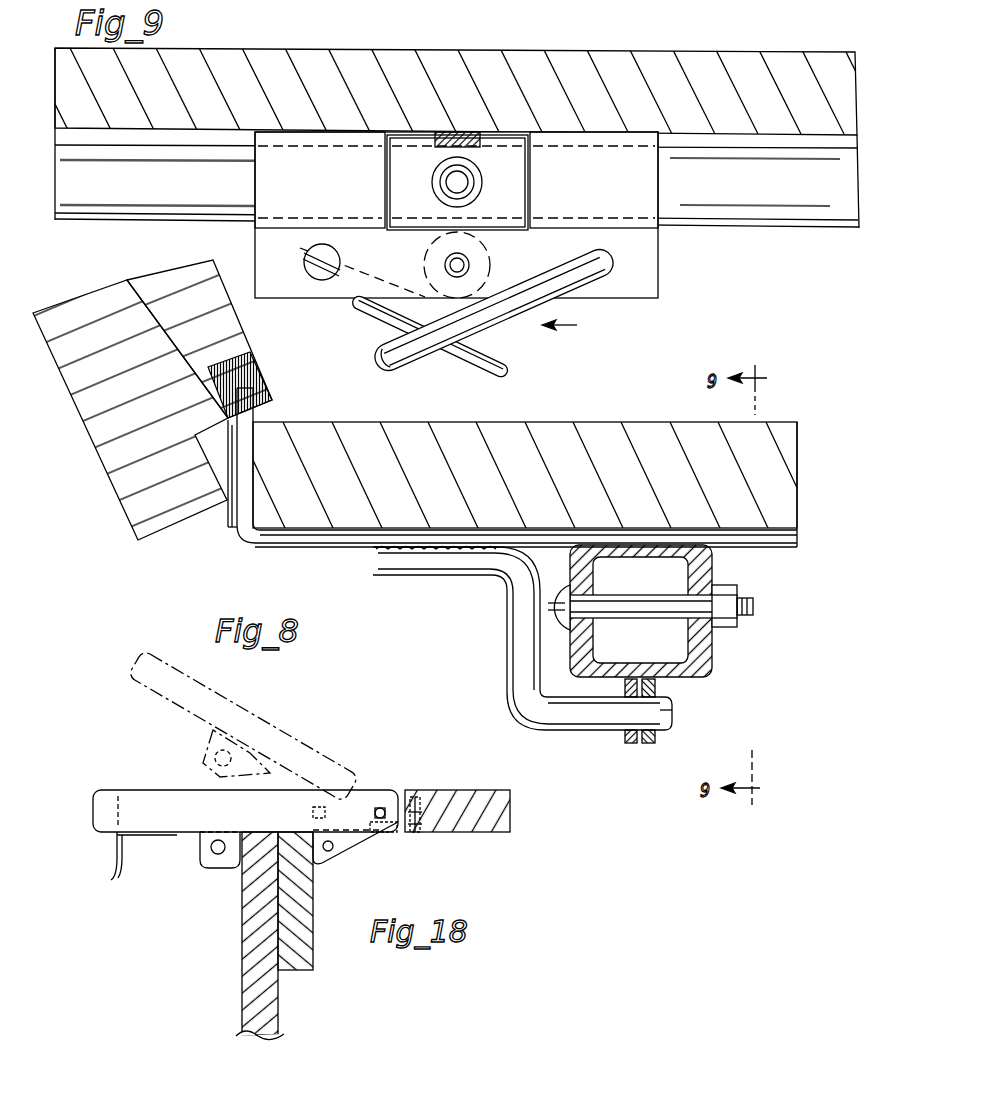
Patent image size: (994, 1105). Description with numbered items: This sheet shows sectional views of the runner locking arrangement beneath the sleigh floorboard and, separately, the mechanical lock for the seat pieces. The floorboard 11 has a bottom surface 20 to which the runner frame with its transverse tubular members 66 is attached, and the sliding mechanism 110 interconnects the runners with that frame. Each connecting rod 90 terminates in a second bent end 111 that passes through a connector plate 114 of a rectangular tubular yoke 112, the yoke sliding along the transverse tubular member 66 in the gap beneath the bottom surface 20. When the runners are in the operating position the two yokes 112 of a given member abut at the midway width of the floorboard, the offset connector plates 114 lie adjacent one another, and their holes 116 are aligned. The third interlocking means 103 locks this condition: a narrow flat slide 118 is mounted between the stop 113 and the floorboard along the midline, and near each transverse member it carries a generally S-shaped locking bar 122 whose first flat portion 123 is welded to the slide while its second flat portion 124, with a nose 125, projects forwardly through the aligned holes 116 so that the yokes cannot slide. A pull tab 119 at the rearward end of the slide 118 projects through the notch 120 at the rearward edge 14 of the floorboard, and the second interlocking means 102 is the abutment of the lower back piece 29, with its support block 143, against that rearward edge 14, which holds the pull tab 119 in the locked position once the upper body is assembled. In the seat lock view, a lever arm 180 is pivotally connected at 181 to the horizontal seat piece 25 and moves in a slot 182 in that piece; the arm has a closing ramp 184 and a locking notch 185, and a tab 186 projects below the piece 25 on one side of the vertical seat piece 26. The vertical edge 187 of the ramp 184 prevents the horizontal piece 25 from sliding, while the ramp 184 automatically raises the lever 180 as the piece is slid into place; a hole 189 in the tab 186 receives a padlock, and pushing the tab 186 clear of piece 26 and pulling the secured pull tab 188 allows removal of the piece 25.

In FIG. 9, the floorboard 11 is at (549, 50).
In FIG. 8, the floorboard 11 is at (641, 422).
In FIG. 9, the bottom surface 20 is at (857, 138).
In FIG. 8, the bottom surface 20 is at (345, 548).
In FIG. 9, the transverse tubular member 66 is at (806, 224).
In FIG. 8, the transverse tubular member 66 is at (700, 645).
In FIG. 9, the third interlocking means 103 is at (671, 260).
In FIG. 8, the third interlocking means 103 is at (570, 738).
In FIG. 9, the yoke 112 is at (318, 197).
In FIG. 9, the connector plate 114 is at (258, 248).
In FIG. 8, the connector plate 114 is at (625, 743).
In FIG. 9, the slide 118 is at (441, 148).
In FIG. 8, the slide 118 is at (362, 548).
In FIG. 9, the stop 113 is at (507, 213).
In FIG. 9, the nose 125 is at (470, 262).
In FIG. 8, the nose 125 is at (673, 716).
In FIG. 9, the hole 116 is at (445, 265).
In FIG. 9, the connecting rod 90 is at (446, 366).
In FIG. 9, the second bent end 111 is at (606, 268).
In FIG. 9, the sliding mechanism 110 is at (576, 328).
In FIG. 8, the lower back piece 29 is at (100, 462).
In FIG. 8, the support block 143 is at (246, 330).
In FIG. 8, the second interlocking means 102 is at (201, 529).
In FIG. 8, the notch 120 is at (226, 525).
In FIG. 8, the rearward edge 14 is at (235, 520).
In FIG. 8, the pull tab 119 is at (256, 412).
In FIG. 8, the first flat portion 123 is at (425, 576).
In FIG. 8, the locking bar 122 is at (517, 652).
In FIG. 8, the second flat portion 124 is at (560, 727).
In FIG. 18, the lever arm 180 is at (224, 698).
In FIG. 18, the pull tab 188 is at (110, 868).
In FIG. 18, the locking notch 185 is at (233, 882).
In FIG. 18, the hole 189 is at (212, 846).
In FIG. 18, the tab 186 is at (207, 860).
In FIG. 18, the vertical seat piece 26 is at (248, 950).
In FIG. 18, the closing ramp 184 is at (352, 854).
In FIG. 18, the vertical edge 187 is at (313, 865).
In FIG. 18, the pivot 181 is at (390, 792).
In FIG. 18, the horizontal seat piece 25 is at (453, 792).
In FIG. 18, the slot 182 is at (395, 838).